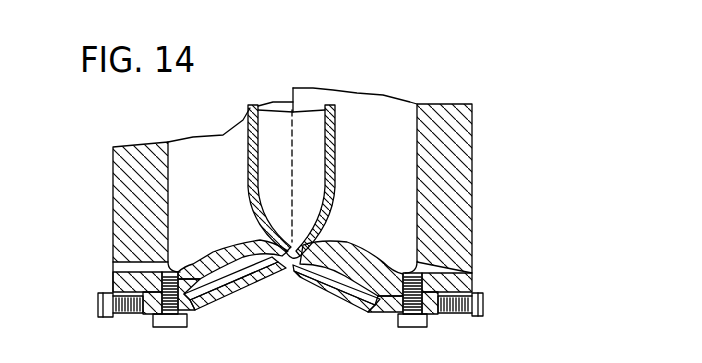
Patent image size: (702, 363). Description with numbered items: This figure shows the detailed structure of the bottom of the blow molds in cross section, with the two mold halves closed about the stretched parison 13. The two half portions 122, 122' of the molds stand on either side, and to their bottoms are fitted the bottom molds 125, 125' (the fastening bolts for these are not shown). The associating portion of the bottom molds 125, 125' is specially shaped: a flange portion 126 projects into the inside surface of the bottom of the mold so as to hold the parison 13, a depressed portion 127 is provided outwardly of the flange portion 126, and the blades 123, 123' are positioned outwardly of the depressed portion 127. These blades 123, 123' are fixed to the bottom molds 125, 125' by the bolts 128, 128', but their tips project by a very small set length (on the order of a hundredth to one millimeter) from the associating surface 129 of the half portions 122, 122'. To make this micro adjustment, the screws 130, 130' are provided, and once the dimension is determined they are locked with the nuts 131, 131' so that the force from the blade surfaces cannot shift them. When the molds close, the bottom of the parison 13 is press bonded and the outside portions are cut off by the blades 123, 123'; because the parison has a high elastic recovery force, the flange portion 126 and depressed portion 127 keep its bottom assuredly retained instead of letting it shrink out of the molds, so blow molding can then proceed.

The parison 13 is at (337, 130).
The half portion of mold 122 is at (471, 188).
The half portion of mold 122' is at (106, 208).
The blade 123 is at (348, 314).
The blade 123' is at (235, 310).
The bottom mold 125 is at (483, 274).
The bottom mold 125' is at (94, 271).
The flange portion 126 is at (233, 286).
The depressed portion 127 is at (351, 285).
The bolt 128 is at (416, 318).
The bolt 128' is at (160, 317).
The associating surface 129 is at (293, 93).
The screw 130 is at (492, 295).
The screw 130' is at (85, 292).
The nut 131 is at (486, 328).
The nut 131' is at (83, 328).